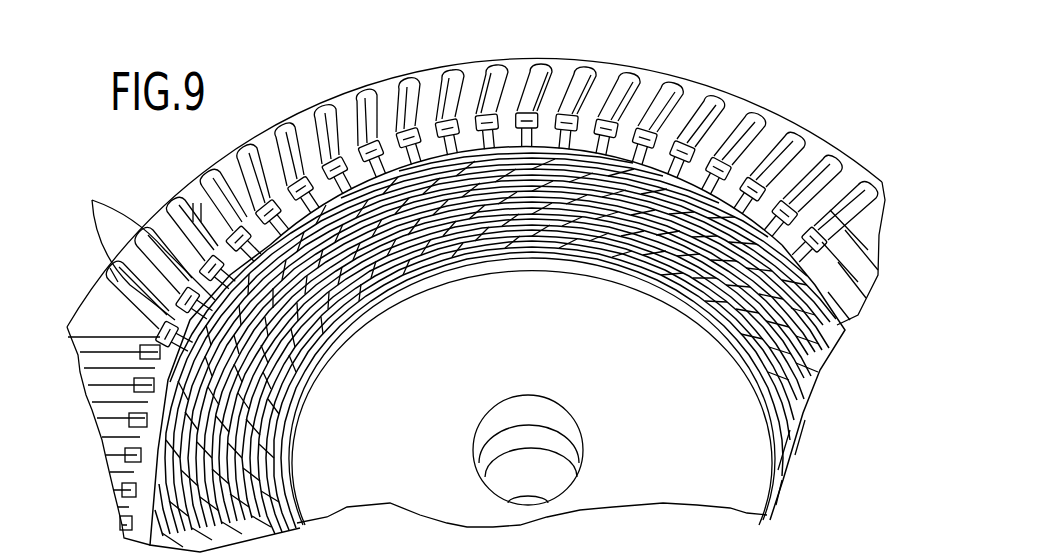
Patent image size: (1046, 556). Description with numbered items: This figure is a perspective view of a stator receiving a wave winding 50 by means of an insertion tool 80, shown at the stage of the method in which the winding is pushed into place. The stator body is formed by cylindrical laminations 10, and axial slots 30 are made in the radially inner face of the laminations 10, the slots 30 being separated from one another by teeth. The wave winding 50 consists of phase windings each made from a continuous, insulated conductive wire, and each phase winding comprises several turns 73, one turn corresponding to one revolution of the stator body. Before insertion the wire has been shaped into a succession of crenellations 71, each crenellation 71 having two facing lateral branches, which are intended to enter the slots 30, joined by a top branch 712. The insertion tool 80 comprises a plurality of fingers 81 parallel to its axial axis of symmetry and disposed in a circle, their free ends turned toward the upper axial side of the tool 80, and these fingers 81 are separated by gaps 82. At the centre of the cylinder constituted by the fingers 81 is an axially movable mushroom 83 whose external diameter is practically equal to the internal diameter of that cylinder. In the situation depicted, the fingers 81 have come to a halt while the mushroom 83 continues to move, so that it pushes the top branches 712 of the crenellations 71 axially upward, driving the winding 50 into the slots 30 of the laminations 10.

The laminations 10 is at (273, 140).
The axial slots 30 is at (392, 82).
The wave winding 50 is at (866, 178).
The crenellations 71 is at (470, 158).
The top branch 712 is at (577, 150).
The turns 73 is at (628, 165).
The insertion tool 80 is at (800, 441).
The fingers 81 is at (153, 246).
The gaps 82 is at (110, 268).
The mushroom 83 is at (645, 437).